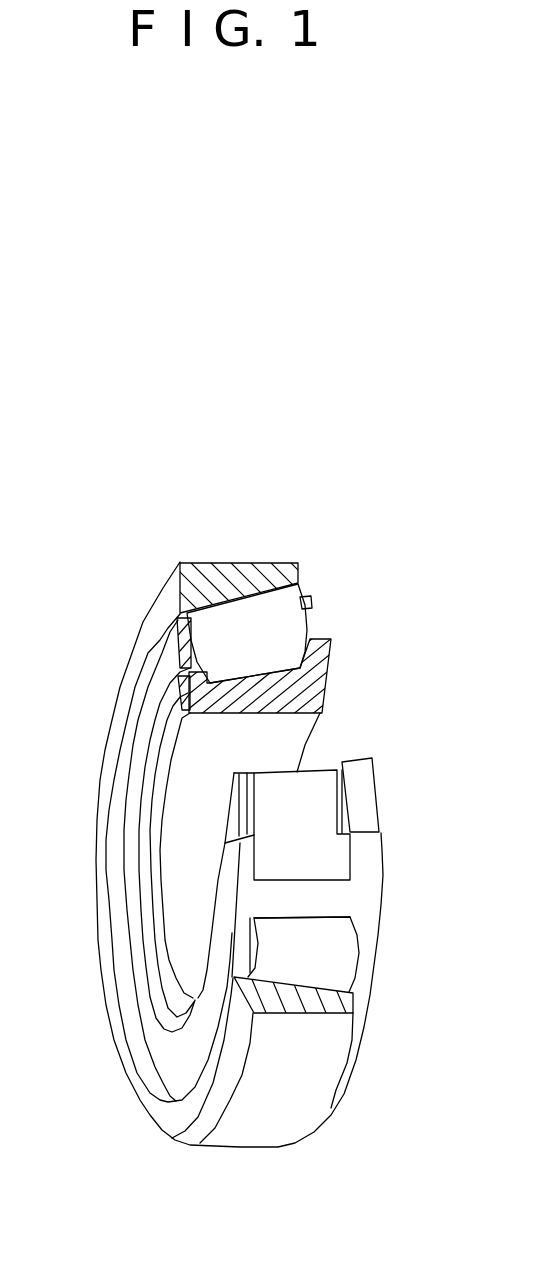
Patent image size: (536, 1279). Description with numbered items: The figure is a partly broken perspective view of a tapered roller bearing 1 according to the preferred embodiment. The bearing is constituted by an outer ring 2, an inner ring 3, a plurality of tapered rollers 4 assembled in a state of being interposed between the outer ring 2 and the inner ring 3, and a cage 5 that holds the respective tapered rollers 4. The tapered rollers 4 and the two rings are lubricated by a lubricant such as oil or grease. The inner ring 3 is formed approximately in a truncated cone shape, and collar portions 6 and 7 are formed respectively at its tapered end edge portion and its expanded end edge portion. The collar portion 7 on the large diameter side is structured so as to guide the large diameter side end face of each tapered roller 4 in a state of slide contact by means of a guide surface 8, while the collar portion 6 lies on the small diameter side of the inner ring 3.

The tapered roller bearing 1 is at (239, 793).
The outer ring 2 is at (227, 789).
The inner ring 3 is at (289, 883).
The tapered roller 4 is at (230, 622).
The cage 5 is at (283, 850).
The collar portion 6 is at (186, 694).
The collar portion 7 is at (310, 664).
The guide surface 8 is at (320, 776).